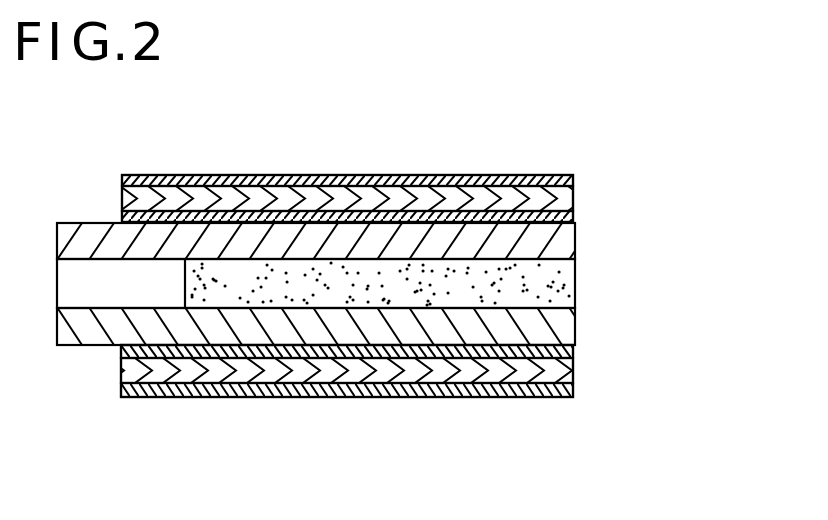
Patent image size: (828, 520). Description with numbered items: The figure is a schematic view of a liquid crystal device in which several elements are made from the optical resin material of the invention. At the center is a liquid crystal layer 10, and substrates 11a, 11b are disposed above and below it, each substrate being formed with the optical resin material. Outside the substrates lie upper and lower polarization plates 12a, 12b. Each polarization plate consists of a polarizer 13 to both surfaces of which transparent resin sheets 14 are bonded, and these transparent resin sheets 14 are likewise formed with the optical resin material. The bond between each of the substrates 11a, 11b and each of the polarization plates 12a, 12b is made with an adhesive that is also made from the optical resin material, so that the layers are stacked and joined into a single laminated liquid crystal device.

The liquid crystal layer 10 is at (575, 288).
The substrate 11a is at (575, 250).
The substrate 11b is at (574, 337).
The upper polarization plate 12a is at (697, 88).
The lower polarization plate 12b is at (688, 373).
The polarizer 13 is at (574, 208).
The transparent resin sheet 14 is at (575, 185).